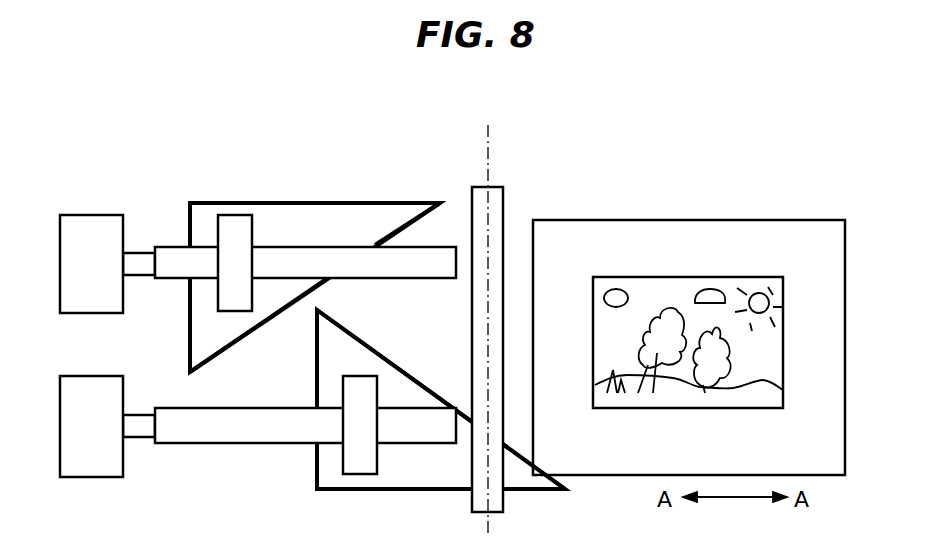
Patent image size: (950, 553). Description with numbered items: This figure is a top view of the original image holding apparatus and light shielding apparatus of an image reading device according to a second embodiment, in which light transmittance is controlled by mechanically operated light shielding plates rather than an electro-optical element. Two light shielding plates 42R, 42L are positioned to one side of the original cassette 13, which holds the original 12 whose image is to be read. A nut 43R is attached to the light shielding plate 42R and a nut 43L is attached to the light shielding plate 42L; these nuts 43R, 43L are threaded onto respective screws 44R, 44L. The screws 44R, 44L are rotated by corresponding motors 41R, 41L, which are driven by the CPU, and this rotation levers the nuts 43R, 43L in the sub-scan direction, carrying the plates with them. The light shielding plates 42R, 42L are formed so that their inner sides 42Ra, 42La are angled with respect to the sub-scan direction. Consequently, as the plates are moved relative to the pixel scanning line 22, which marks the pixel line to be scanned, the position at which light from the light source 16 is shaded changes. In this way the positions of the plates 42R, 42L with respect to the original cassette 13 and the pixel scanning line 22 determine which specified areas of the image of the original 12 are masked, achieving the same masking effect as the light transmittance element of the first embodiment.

The original 12 is at (783, 332).
The original cassette 13 is at (715, 220).
The light source 16 is at (493, 187).
The pixel scanning line 22 is at (488, 147).
The motor 41R is at (92, 230).
The motor 41L is at (102, 457).
The light shielding plate 42R is at (350, 218).
The light shielding plate 42L is at (400, 467).
The inner side 42Ra is at (313, 283).
The inner side 42La is at (367, 343).
The nut 43R is at (230, 228).
The nut 43L is at (352, 393).
The screw 44R is at (322, 258).
The screw 44L is at (182, 428).